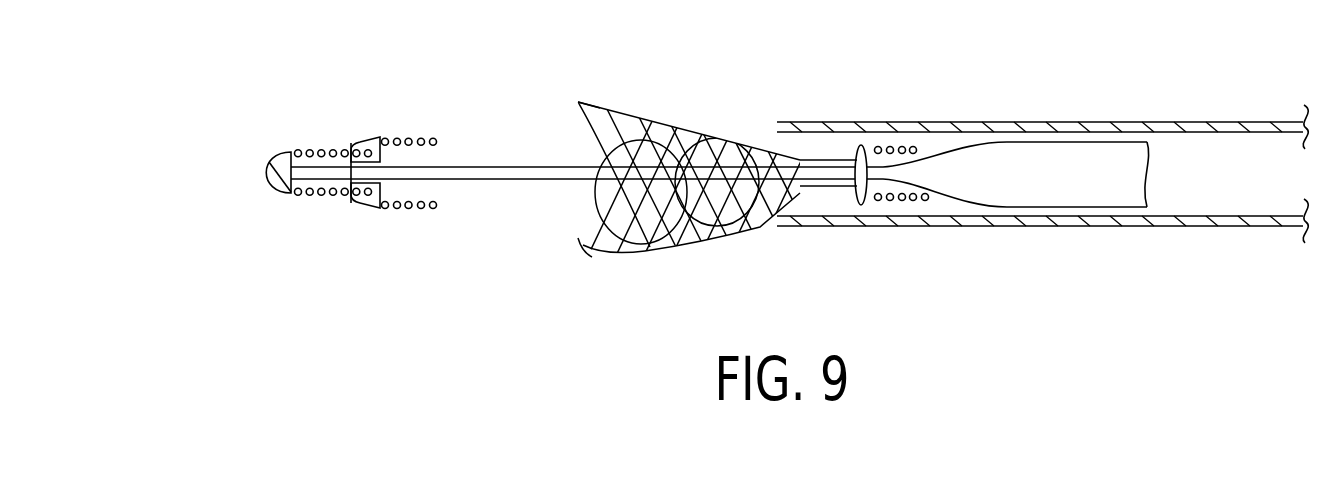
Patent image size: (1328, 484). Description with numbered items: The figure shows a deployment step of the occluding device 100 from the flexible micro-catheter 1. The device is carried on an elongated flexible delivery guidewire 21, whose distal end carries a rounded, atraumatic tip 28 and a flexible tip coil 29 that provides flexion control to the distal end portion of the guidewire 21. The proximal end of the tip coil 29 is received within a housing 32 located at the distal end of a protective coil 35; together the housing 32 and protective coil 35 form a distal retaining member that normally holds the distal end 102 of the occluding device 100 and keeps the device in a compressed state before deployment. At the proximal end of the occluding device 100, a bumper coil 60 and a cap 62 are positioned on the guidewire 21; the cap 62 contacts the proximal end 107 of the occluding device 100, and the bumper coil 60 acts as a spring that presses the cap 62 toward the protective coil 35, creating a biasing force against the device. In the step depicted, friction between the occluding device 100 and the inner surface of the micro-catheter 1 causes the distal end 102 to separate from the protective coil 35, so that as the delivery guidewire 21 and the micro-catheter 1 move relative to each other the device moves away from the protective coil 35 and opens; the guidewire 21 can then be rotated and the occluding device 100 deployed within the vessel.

The micro-catheter 1 is at (1222, 122).
The guidewire 21 is at (318, 167).
The tip 28 is at (270, 188).
The tip coil 29 is at (322, 197).
The housing 32 is at (366, 208).
The protective coil 35 is at (408, 209).
The bumper coil 60 is at (900, 148).
The cap 62 is at (863, 147).
The occluding device 100 is at (678, 249).
The distal end of the occluding device 102 is at (570, 126).
The proximal end of the occluding device 107 is at (788, 158).